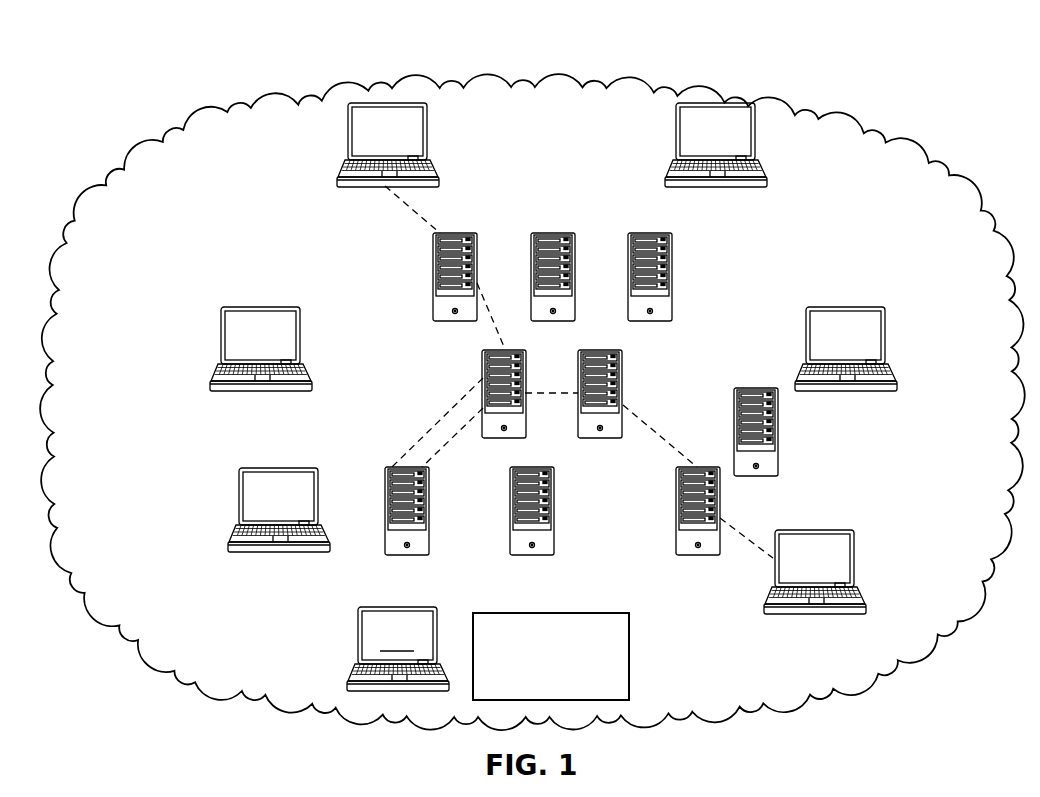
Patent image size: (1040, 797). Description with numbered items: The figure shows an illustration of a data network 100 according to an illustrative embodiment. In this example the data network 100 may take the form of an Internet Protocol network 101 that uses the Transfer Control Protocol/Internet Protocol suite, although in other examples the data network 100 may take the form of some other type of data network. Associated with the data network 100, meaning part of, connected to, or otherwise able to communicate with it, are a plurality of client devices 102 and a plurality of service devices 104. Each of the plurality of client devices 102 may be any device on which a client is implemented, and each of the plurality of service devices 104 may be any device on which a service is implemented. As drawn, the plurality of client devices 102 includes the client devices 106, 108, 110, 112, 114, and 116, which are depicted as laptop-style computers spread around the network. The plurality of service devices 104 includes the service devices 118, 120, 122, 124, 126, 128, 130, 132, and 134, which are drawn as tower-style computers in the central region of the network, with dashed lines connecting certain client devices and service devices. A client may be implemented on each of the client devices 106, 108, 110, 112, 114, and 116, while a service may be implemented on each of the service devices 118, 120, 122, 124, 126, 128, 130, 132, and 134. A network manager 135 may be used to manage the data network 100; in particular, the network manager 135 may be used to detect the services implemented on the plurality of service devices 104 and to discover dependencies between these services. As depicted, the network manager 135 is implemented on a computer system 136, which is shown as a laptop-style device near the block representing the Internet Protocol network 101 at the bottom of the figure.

The data network 100 is at (386, 74).
The Internet Protocol network 101 is at (630, 660).
The plurality of client devices 102 is at (226, 300).
The plurality of service devices 104 is at (574, 224).
The client device 106 is at (362, 188).
The client device 108 is at (220, 332).
The client device 110 is at (237, 519).
The client device 112 is at (740, 188).
The client device 114 is at (885, 330).
The client device 116 is at (854, 560).
The service device 118 is at (432, 274).
The service device 120 is at (547, 232).
The service device 122 is at (672, 270).
The service device 124 is at (482, 372).
The service device 126 is at (622, 370).
The service device 128 is at (407, 556).
The service device 130 is at (778, 430).
The service device 132 is at (532, 556).
The service device 134 is at (700, 556).
The network manager 135 is at (357, 637).
The computer system 136 is at (399, 639).